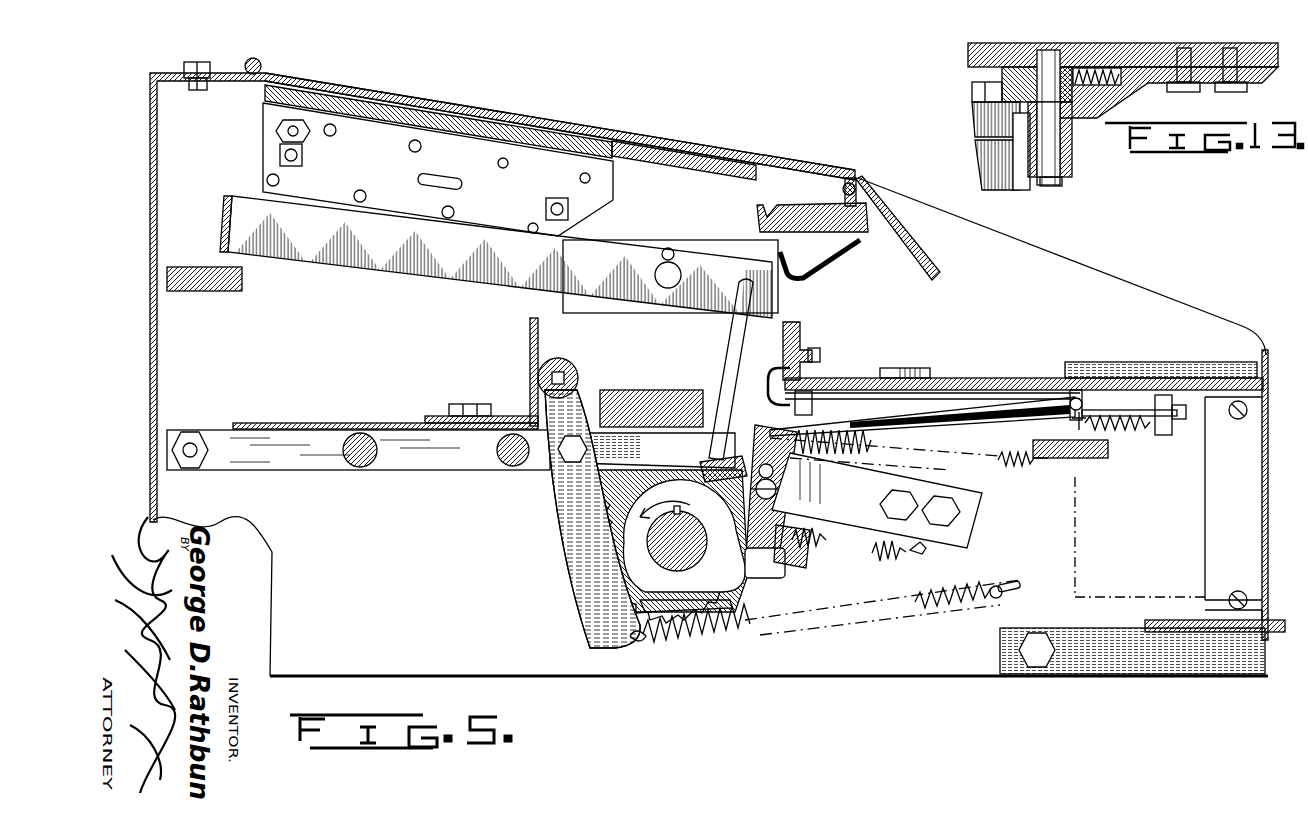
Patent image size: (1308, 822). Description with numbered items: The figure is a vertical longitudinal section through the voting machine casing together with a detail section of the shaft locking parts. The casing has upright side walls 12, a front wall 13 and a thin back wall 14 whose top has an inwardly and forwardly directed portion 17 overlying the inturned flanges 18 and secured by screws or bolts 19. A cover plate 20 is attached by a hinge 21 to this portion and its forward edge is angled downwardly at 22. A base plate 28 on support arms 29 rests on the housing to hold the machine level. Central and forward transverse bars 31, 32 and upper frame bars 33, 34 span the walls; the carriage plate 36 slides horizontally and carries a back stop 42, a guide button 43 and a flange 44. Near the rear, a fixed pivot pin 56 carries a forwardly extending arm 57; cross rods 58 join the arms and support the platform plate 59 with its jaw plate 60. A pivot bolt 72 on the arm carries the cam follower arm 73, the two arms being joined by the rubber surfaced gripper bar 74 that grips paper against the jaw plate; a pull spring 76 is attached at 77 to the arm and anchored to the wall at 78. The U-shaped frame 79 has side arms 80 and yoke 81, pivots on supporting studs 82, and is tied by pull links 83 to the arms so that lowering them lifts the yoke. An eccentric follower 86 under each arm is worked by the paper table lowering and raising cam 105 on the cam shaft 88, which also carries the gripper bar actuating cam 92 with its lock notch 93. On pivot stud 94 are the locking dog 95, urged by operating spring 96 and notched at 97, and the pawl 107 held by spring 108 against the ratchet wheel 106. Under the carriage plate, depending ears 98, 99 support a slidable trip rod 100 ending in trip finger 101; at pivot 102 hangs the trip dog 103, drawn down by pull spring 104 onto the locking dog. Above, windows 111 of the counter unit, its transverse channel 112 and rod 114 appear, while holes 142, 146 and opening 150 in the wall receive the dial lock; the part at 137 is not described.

In FIG. 5, the side wall 12 is at (910, 677).
In FIG. 5, the front wall 13 is at (1262, 516).
In FIG. 5, the back wall 14 is at (151, 292).
In FIG. 5, the inwardly and forwardly directed portion 17 is at (244, 74).
In FIG. 5, the inturned flange 18 is at (165, 78).
In FIG. 5, the screws or bolts 19 is at (197, 62).
In FIG. 5, the cover plate 20 is at (818, 167).
In FIG. 5, the hinge 21 is at (262, 64).
In FIG. 5, the downwardly angled edge 22 is at (903, 226).
In FIG. 5, the base plate 28 is at (1232, 633).
In FIG. 5, the support arm 29 is at (1112, 662).
In FIG. 5, the central transverse bar 31 is at (620, 390).
In FIG. 5, the forward transverse bar 32 is at (1088, 460).
In FIG. 5, the forward upper transverse frame bar 33 is at (818, 208).
In FIG. 5, the rear upper transverse frame bar 34 is at (216, 292).
In FIG. 5, the ballot part carriage plate 36 is at (1040, 378).
In FIG. 5, the back stop 42 is at (1153, 362).
In FIG. 5, the ballot part guide button 43 is at (905, 368).
In FIG. 5, the carriage plate flange 44 is at (796, 322).
In FIG. 5, the fixed pivot pin 56 is at (193, 444).
In FIG. 5, the forwardly extending arm 57 is at (432, 468).
In FIG. 5, the cross rod 58 is at (355, 468).
In FIG. 5, the platform plate 59 is at (324, 422).
In FIG. 5, the paper guide and jaw plate 60 is at (529, 346).
In FIG. 5, the pivot bolt 72 is at (566, 458).
In FIG. 5, the cam follower arm 73 is at (590, 621).
In FIG. 5, the rubber surfaced gripper bar 74 is at (562, 360).
In FIG. 5, the pull spring 76 is at (735, 636).
In FIG. 5, the spring attachment point 77 is at (638, 640).
In FIG. 5, the spring anchorage 78 is at (1003, 586).
In FIG. 5, the U-shaped frame 79 is at (233, 186).
In FIG. 5, the side arm 80 is at (342, 262).
In FIG. 5, the cross connecting yoke 81 is at (221, 222).
In FIG. 5, the supporting stud 82 is at (666, 288).
In FIG. 5, the pull link 83 is at (735, 347).
In FIG. 5, the eccentric follower 86 is at (650, 604).
In FIG. 5, the cam or eccentric shaft 88 is at (676, 574).
In FIG. 5, the gripper bar actuating cam 92 is at (738, 585).
In FIG. 13, the gripper bar actuating cam 92 is at (975, 153).
In FIG. 5, the lock notch 93 is at (778, 566).
In FIG. 13, the lock notch 93 is at (1020, 190).
In FIG. 5, the pivot stud 94 is at (812, 484).
In FIG. 13, the pivot stud 94 is at (1062, 182).
In FIG. 5, the locking dog 95 is at (820, 546).
In FIG. 13, the locking dog 95 is at (1072, 165).
In FIG. 5, the operating spring 96 is at (1020, 470).
In FIG. 5, the notch 97 is at (772, 398).
In FIG. 5, the depending ear 98 is at (828, 381).
In FIG. 5, the depending ear 99 is at (1172, 436).
In FIG. 5, the slidable trip rod 100 is at (930, 400).
In FIG. 5, the trip finger 101 is at (822, 348).
In FIG. 5, the pivot 102 is at (1080, 392).
In FIG. 5, the trip dog 103 is at (983, 412).
In FIG. 5, the pull spring 104 is at (1122, 432).
In FIG. 5, the paper table lowering and raising cam 105 is at (652, 458).
In FIG. 13, the paper table lowering and raising cam 105 is at (972, 110).
In FIG. 5, the ratchet wheel 106 is at (690, 634).
In FIG. 13, the ratchet wheel 106 is at (972, 86).
In FIG. 5, the pawl 107 is at (710, 478).
In FIG. 13, the pawl 107 is at (1000, 73).
In FIG. 5, the spring 108 is at (880, 563).
In FIG. 13, the spring 108 is at (1103, 66).
In FIG. 5, the window 111 is at (540, 124).
In FIG. 5, the transverse channel 112 is at (668, 156).
In FIG. 5, the rod 114 is at (852, 182).
In FIG. 5, the hook bracket 137 is at (760, 212).
In FIG. 5, the hole 142 is at (279, 180).
In FIG. 5, the hole 146 is at (336, 128).
In FIG. 5, the opening and pin 150 is at (440, 180).